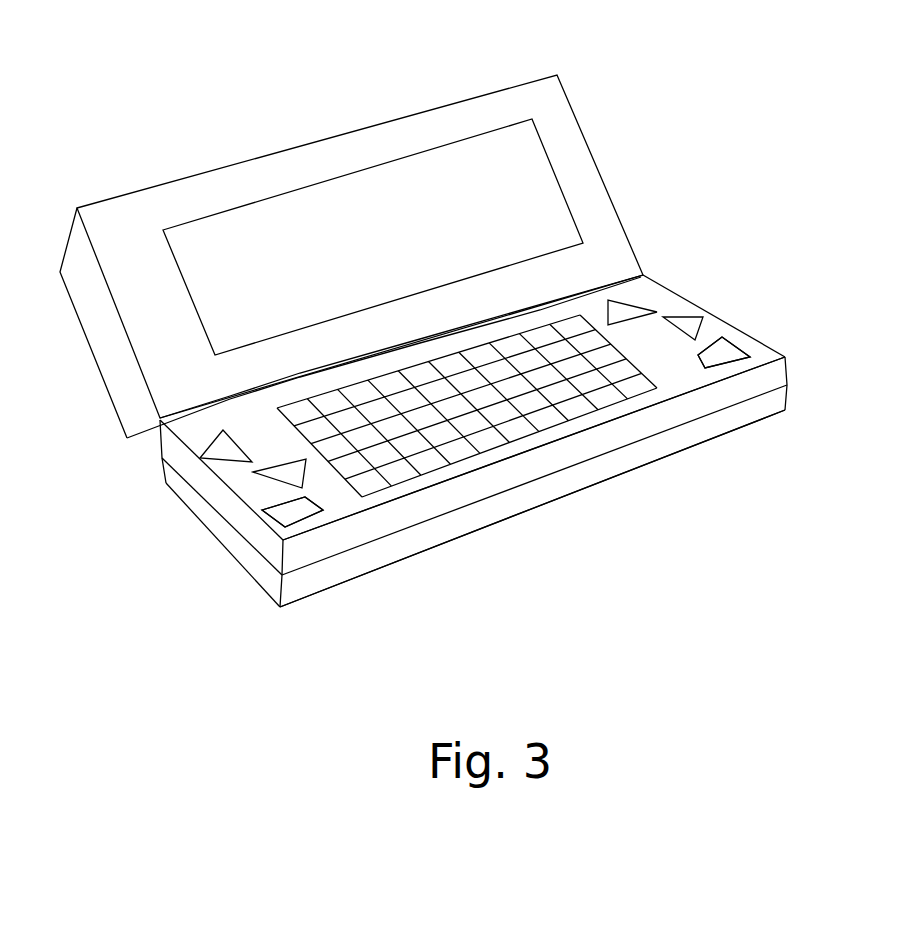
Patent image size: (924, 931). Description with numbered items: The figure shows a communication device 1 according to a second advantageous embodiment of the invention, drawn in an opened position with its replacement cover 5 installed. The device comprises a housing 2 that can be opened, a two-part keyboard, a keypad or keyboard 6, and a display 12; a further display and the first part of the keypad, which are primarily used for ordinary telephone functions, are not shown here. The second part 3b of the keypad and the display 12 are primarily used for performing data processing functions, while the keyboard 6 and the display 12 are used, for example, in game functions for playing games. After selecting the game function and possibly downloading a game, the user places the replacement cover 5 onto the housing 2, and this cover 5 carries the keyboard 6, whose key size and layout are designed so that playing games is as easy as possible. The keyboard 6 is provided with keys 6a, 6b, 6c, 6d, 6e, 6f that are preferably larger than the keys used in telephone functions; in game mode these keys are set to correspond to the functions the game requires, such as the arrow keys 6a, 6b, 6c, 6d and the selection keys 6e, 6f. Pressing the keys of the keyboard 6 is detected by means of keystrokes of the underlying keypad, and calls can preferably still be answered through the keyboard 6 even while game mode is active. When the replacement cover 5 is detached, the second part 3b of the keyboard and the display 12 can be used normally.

The communication device 1 is at (500, 580).
The housing 2 is at (298, 606).
The second part of the keypad 3b is at (552, 438).
The replacement cover 5 is at (390, 517).
The keyboard 6 is at (330, 510).
The arrow key 6a is at (170, 487).
The arrow key 6b is at (707, 310).
The arrow key 6c is at (643, 303).
The arrow key 6d is at (278, 470).
The selection key 6e is at (280, 515).
The selection key 6f is at (770, 348).
The display 12 is at (558, 187).